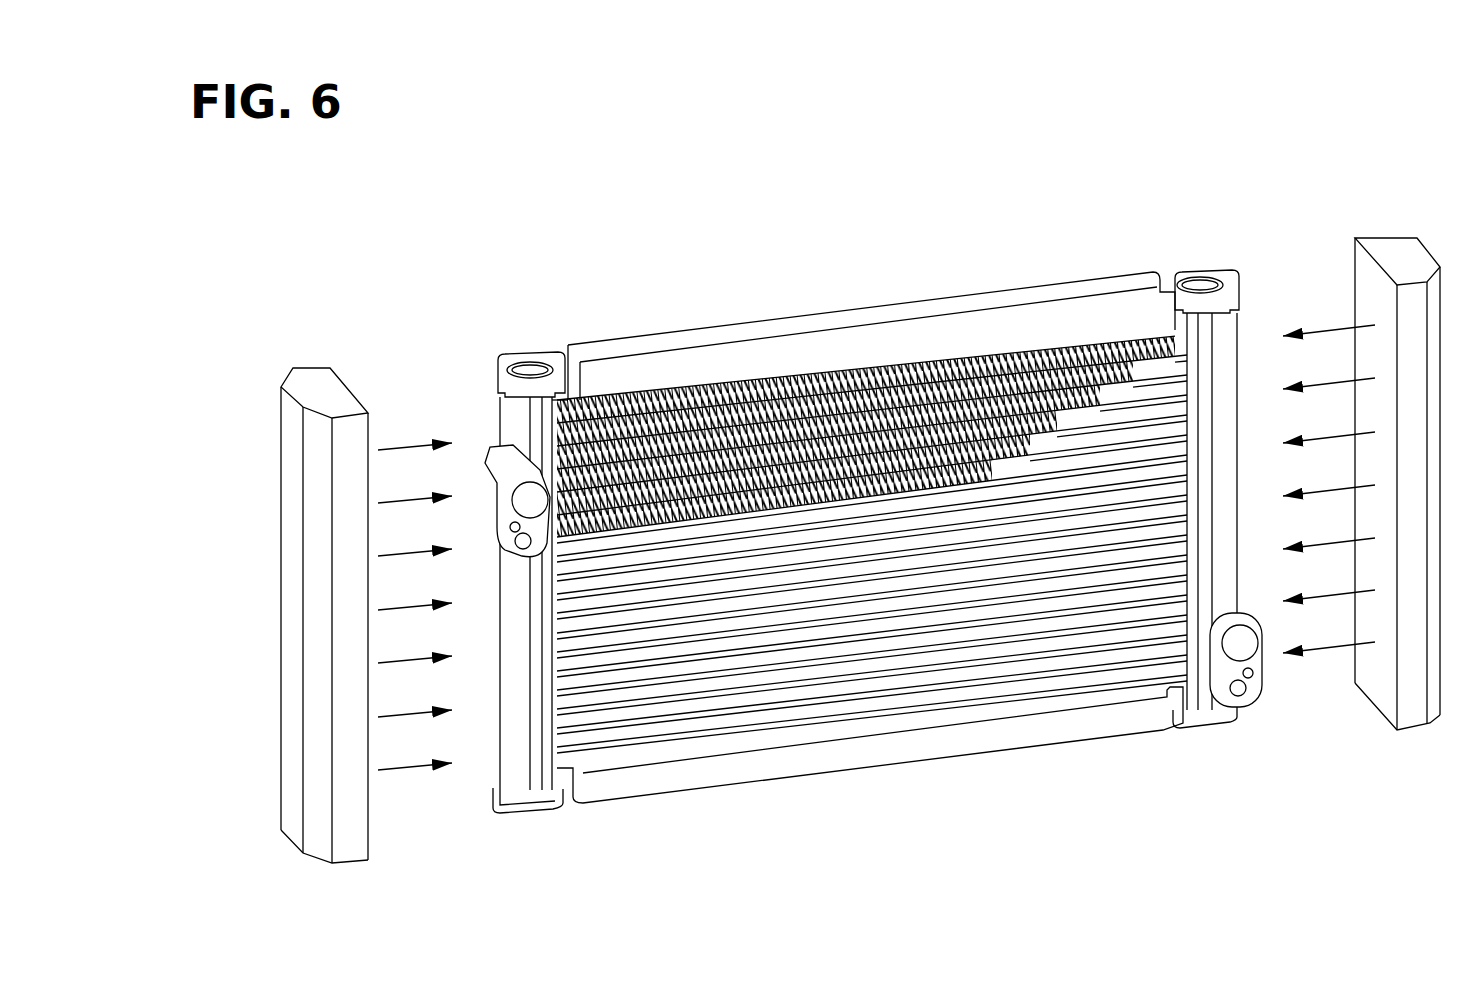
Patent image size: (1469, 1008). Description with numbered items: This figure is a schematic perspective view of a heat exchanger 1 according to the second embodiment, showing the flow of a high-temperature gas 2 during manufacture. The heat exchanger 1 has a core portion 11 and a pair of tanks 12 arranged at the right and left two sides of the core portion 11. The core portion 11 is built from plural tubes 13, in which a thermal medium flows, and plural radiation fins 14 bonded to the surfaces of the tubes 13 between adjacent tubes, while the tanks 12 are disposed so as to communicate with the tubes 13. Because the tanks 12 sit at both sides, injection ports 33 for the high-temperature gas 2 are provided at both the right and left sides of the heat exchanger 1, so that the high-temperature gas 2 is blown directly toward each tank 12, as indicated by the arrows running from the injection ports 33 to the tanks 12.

The heat exchanger 1 is at (923, 220).
The high-temperature gas 2 is at (405, 445).
The core portion 11 is at (855, 630).
The tank 12 is at (527, 750).
The tube 13 is at (1148, 380).
The radiation fin 14 is at (653, 447).
The injection port 33 is at (316, 390).